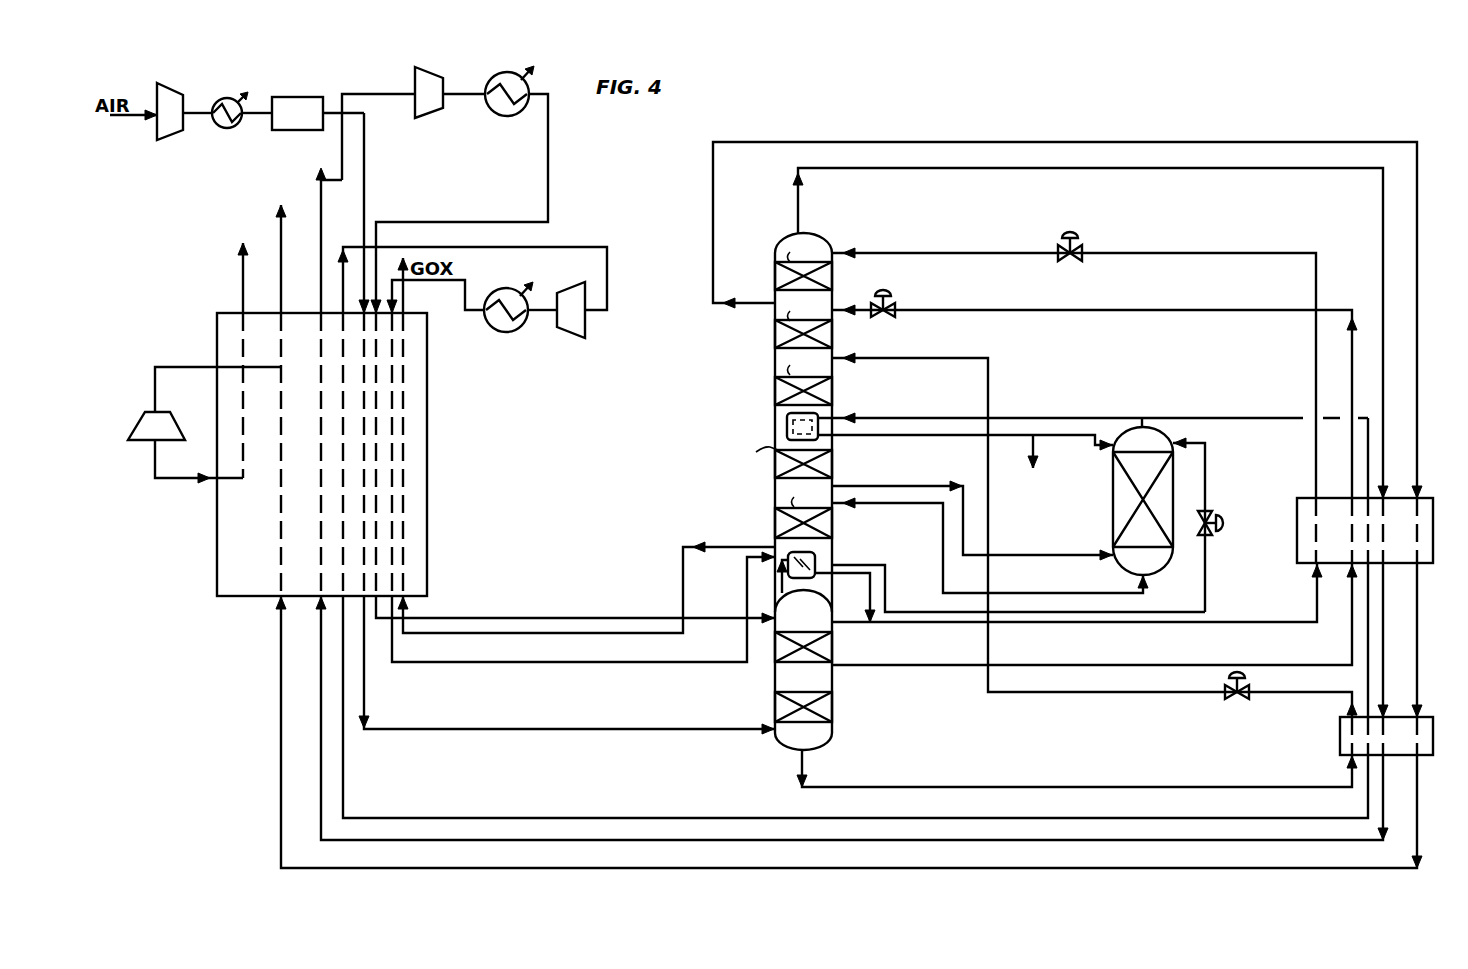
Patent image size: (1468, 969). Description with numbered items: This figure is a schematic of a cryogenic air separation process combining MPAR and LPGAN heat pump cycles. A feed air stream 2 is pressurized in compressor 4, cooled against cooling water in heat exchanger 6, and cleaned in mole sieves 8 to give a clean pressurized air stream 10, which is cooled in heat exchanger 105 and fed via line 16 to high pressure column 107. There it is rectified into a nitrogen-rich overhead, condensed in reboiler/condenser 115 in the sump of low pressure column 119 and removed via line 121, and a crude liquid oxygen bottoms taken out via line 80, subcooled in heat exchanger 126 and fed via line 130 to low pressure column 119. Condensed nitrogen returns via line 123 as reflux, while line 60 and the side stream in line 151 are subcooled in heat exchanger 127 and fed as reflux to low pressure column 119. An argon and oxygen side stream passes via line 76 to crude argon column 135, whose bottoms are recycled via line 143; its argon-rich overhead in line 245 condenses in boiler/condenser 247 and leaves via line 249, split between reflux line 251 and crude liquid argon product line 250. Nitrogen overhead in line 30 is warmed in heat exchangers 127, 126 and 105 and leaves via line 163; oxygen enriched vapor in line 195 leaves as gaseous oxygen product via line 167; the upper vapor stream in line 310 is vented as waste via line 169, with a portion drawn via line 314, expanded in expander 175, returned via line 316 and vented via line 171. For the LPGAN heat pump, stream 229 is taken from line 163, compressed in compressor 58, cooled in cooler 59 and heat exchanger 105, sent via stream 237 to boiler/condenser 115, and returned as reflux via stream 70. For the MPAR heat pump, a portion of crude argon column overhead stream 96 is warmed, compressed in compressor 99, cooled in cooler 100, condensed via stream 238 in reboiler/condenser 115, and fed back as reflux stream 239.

The feed air stream 2 is at (141, 106).
The compressor 4 is at (175, 96).
The heat exchanger 6 is at (228, 98).
The mole sieves 8 is at (286, 97).
The clean, pressurized air stream 10 is at (365, 216).
The line 16 is at (516, 727).
The line 30 is at (802, 215).
The compressor 58 is at (428, 118).
The cooler 59 is at (505, 116).
The line 60 is at (1254, 620).
The stream 70 is at (947, 253).
The line 76 is at (900, 486).
The line 80 is at (1150, 787).
The crude argon column overhead stream 96 is at (1222, 413).
The compressor 99 is at (562, 338).
The cooler 100 is at (500, 332).
The heat exchanger 105 is at (217, 559).
The high pressure column 107 is at (838, 680).
The reboiler/condenser 115 is at (815, 573).
The low pressure column 119 is at (770, 365).
The line 121 is at (863, 605).
The line 123 is at (848, 627).
The heat exchanger 126 is at (1340, 728).
The heat exchanger 127 is at (1331, 567).
The line 130 is at (885, 358).
The crude argon column 135 is at (1112, 478).
The line 143 is at (1067, 594).
The line 151 is at (1165, 665).
The line 163 is at (335, 210).
The line 167 is at (407, 293).
The line 169 is at (283, 252).
The line 171 is at (244, 277).
The expander 175 is at (137, 412).
The line 195 is at (735, 549).
The stream 229 is at (372, 93).
The stream 237 is at (553, 618).
The stream 238 is at (628, 664).
The reflux stream 239 is at (1215, 470).
The line 245 is at (1117, 416).
The boiler/condenser 247 is at (828, 413).
The line 249 is at (874, 435).
The line 250 is at (1034, 436).
The line 251 is at (1058, 432).
The line 310 is at (714, 230).
The line 314 is at (192, 366).
The line 316 is at (170, 480).